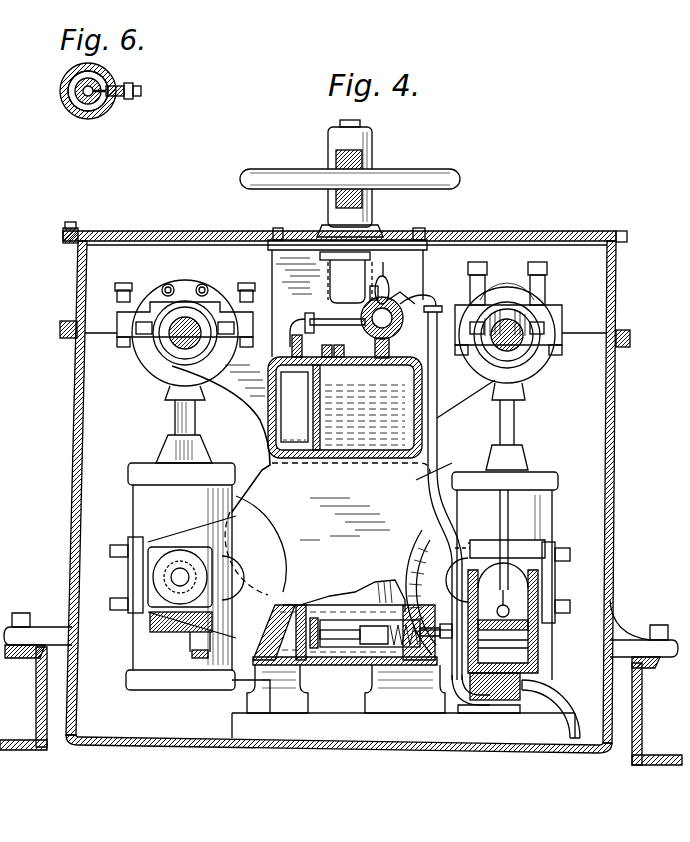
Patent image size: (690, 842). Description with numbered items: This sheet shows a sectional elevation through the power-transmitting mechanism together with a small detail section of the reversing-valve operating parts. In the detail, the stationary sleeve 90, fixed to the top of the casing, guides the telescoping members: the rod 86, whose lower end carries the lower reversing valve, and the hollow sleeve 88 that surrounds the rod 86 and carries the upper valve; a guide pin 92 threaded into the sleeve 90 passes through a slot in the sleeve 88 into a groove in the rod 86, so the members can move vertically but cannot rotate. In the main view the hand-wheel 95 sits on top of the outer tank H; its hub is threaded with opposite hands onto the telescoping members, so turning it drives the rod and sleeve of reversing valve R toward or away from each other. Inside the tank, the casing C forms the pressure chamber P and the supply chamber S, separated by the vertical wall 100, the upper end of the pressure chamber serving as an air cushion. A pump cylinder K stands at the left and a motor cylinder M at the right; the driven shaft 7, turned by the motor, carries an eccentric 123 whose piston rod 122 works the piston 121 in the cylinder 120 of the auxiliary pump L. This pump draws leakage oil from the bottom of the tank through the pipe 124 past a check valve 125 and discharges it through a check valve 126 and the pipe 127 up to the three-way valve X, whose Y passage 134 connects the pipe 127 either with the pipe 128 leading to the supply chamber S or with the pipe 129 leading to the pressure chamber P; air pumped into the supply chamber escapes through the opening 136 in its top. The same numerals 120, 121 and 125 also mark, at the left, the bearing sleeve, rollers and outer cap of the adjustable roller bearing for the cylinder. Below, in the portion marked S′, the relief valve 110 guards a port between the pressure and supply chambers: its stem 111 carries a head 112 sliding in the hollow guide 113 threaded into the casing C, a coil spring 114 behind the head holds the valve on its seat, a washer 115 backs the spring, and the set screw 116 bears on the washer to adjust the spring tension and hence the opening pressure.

In FIG. 6, the hollow rod or sleeve 88 is at (62, 86).
In FIG. 6, the stationary sleeve 90 is at (70, 110).
In FIG. 6, the rod 86 is at (88, 106).
In FIG. 6, the guide pin 92 is at (112, 100).
In FIG. 4, the reversing valve R is at (378, 165).
In FIG. 4, the hand-wheel 95 is at (450, 174).
In FIG. 4, the driven shaft 7 is at (366, 274).
In FIG. 4, the three-way valve X is at (397, 302).
In FIG. 4, the pipe 127 is at (415, 300).
In FIG. 4, the pipe 129 is at (305, 322).
In FIG. 4, the opening 136 is at (330, 338).
In FIG. 4, the Y passage 134 is at (394, 326).
In FIG. 4, the pipe 128 is at (390, 345).
In FIG. 4, the eccentric 123 is at (533, 365).
In FIG. 4, the housing H is at (616, 375).
In FIG. 4, the vertical wall 100 is at (306, 412).
In FIG. 4, the pressure chamber P is at (267, 427).
In FIG. 4, the supply chamber S is at (428, 424).
In FIG. 4, the casing C is at (413, 482).
In FIG. 4, the piston rod 122 is at (505, 465).
In FIG. 4, the cylinder K is at (140, 512).
In FIG. 4, the check valve 125 is at (140, 572).
In FIG. 4, the cylinder 120 is at (175, 595).
In FIG. 4, the hollow guide or sleeve 113 is at (388, 583).
In FIG. 4, the head 112 is at (368, 600).
In FIG. 4, the stem 111 is at (342, 618).
In FIG. 4, the relief valve 110 is at (314, 616).
In FIG. 4, the motor cylinder M is at (545, 512).
In FIG. 4, the piston 121 is at (550, 606).
In FIG. 4, the auxiliary pump L is at (540, 638).
In FIG. 4, the sump S′ is at (365, 662).
In FIG. 4, the adjustable set screw 116 is at (452, 660).
In FIG. 4, the coil spring 114 is at (365, 662).
In FIG. 4, the washer 115 is at (405, 665).
In FIG. 4, the pipe 124 is at (555, 706).
In FIG. 4, the check valve 126 is at (497, 706).